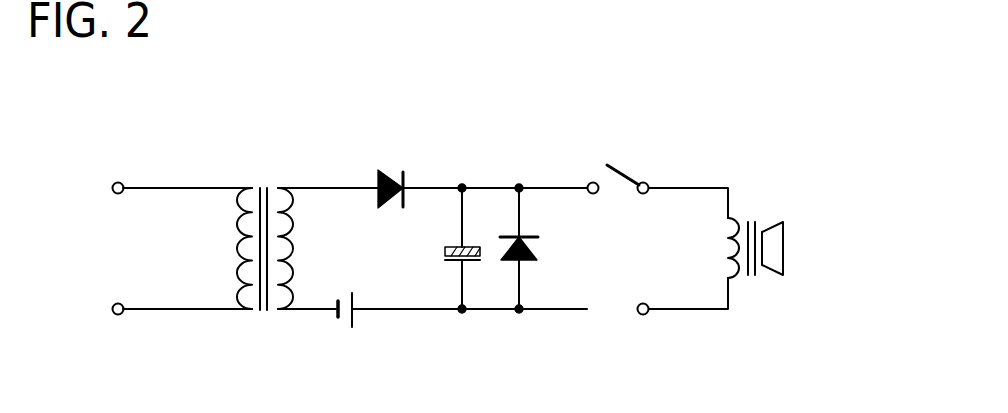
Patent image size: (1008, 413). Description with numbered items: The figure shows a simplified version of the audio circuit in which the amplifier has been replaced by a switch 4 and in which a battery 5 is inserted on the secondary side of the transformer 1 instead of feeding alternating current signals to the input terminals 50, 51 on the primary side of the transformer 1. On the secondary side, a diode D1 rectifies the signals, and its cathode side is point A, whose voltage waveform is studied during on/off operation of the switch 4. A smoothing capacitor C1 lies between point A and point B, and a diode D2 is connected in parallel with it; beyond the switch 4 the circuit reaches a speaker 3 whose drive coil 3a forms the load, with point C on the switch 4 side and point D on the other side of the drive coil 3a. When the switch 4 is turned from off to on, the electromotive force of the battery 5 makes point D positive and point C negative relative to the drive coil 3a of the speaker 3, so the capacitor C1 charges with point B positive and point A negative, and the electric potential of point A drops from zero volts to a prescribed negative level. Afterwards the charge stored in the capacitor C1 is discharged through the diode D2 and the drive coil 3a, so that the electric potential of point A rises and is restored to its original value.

The input terminal 50 is at (113, 185).
The input terminal 51 is at (114, 313).
The transformer 1 is at (264, 182).
The diode D1 is at (393, 173).
The point A is at (466, 158).
The smoothing capacitor C1 is at (443, 253).
The point B is at (453, 335).
The battery 5 is at (343, 328).
The diode D2 is at (543, 245).
The switch 4 is at (633, 162).
The point C is at (661, 161).
The point D is at (634, 340).
The drive coil 3a is at (734, 216).
The speaker 3 is at (763, 197).